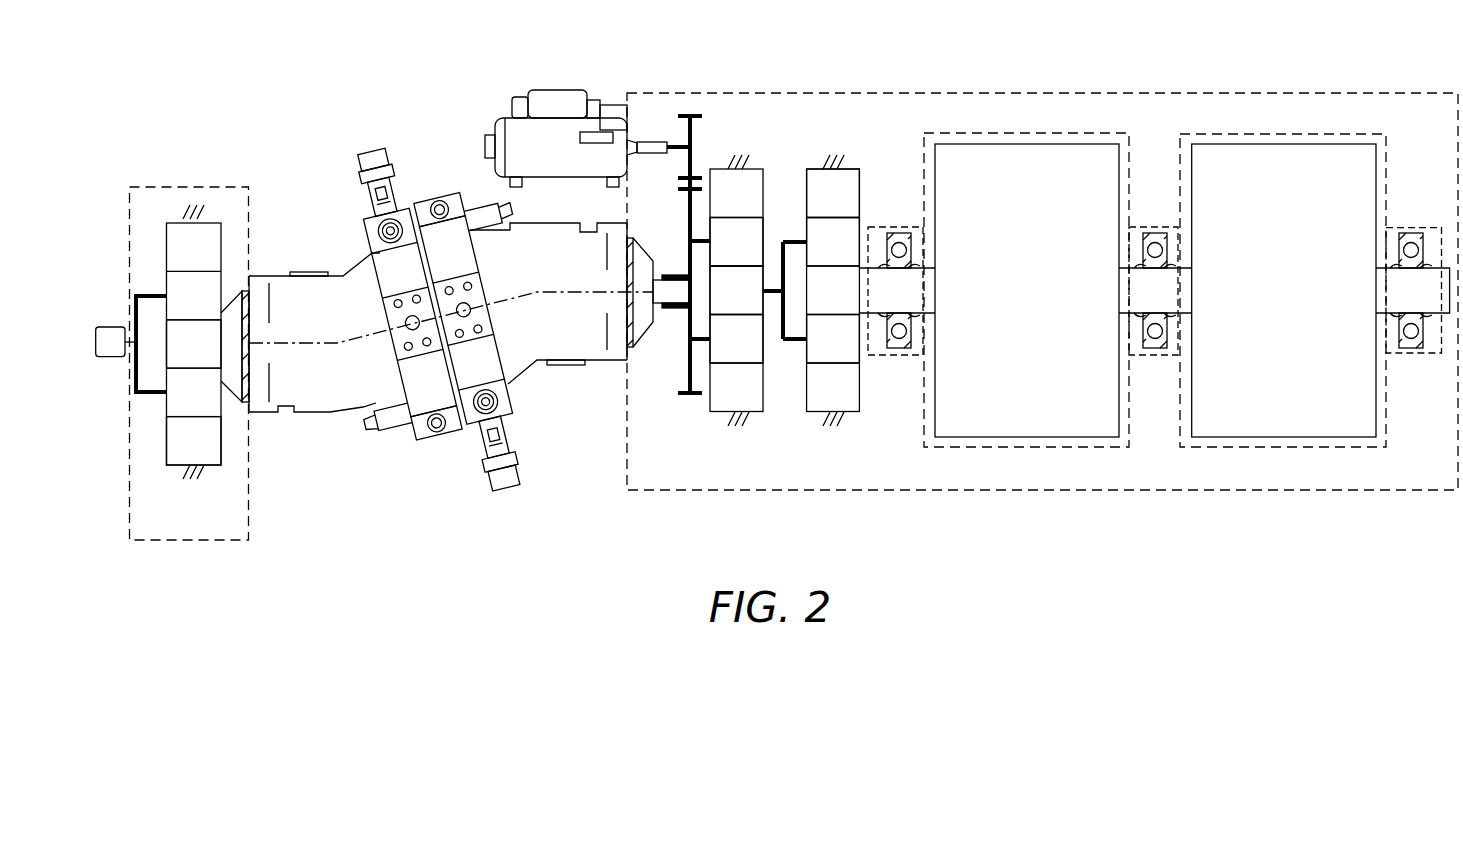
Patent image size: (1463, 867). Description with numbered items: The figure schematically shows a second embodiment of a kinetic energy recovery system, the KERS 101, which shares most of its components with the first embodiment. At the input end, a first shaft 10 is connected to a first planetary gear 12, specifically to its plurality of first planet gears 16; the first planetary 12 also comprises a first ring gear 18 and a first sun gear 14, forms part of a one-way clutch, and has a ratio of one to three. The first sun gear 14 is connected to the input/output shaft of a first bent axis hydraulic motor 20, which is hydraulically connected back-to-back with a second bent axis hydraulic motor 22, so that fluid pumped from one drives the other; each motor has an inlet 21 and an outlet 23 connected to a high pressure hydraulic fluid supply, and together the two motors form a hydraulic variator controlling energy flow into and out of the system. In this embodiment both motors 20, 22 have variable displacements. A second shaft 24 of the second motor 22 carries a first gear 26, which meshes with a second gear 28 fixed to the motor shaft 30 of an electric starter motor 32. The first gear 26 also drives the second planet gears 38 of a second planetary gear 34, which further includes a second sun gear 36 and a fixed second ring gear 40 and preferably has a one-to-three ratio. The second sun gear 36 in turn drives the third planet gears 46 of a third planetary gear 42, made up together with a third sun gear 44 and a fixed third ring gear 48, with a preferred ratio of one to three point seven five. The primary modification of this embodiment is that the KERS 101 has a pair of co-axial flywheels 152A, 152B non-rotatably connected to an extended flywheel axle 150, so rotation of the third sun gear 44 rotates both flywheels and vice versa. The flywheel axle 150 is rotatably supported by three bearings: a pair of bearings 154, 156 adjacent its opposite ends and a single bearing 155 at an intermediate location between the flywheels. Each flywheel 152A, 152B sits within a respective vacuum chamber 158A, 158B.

The first shaft 10 is at (110, 333).
The first planetary gear 12 is at (198, 548).
The first sun gear 14 is at (164, 334).
The first planet gears 16 is at (223, 278).
The first ring gear 18 is at (223, 445).
The first bent axis hydraulic motor 20 is at (451, 311).
The inlet 21 is at (400, 165).
The second bent axis hydraulic motor 22 is at (575, 384).
The outlet 23 is at (488, 203).
The second shaft 24 is at (675, 308).
The first gear 26 is at (690, 183).
The second gear 28 is at (697, 120).
The motor shaft 30 is at (695, 248).
The electric starter motor 32 is at (548, 97).
The second planetary gear 34 is at (741, 497).
The second sun gear 36 is at (716, 276).
The second planet gears 38 is at (765, 226).
The second ring gear 40 is at (700, 404).
The third planetary gear 42 is at (836, 497).
The third sun gear 44 is at (862, 290).
The third planet gears 46 is at (861, 226).
The third ring gear 48 is at (812, 166).
The KERS 101 is at (702, 80).
The flywheel axle 150 is at (1413, 312).
The flywheel 152A is at (972, 158).
The flywheel 152B is at (1248, 157).
The bearing 154 is at (898, 227).
The bearing 155 is at (1154, 227).
The bearing 156 is at (1412, 233).
The vacuum chamber 158A is at (1078, 133).
The vacuum chamber 158B is at (1353, 134).